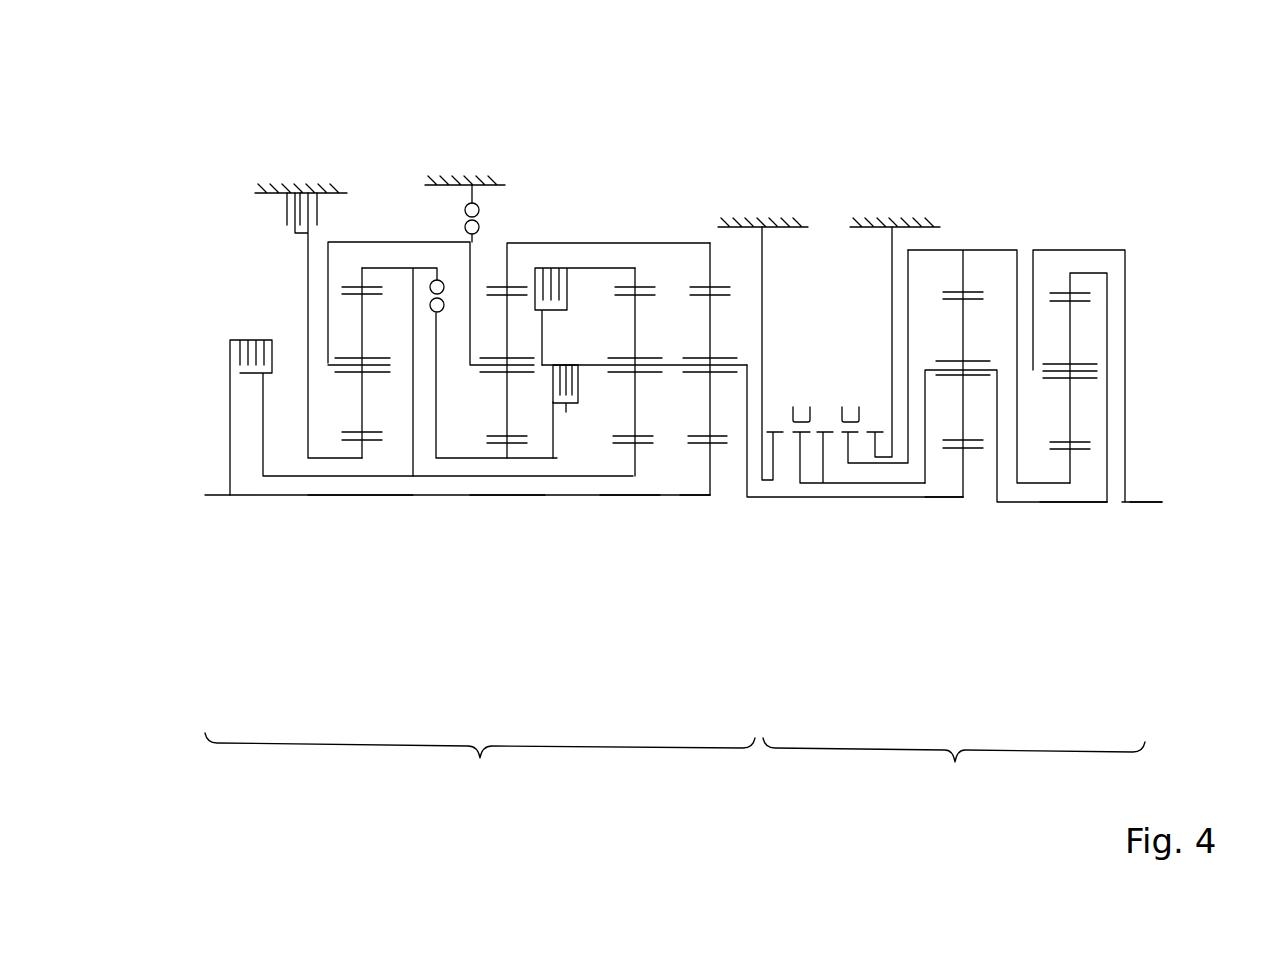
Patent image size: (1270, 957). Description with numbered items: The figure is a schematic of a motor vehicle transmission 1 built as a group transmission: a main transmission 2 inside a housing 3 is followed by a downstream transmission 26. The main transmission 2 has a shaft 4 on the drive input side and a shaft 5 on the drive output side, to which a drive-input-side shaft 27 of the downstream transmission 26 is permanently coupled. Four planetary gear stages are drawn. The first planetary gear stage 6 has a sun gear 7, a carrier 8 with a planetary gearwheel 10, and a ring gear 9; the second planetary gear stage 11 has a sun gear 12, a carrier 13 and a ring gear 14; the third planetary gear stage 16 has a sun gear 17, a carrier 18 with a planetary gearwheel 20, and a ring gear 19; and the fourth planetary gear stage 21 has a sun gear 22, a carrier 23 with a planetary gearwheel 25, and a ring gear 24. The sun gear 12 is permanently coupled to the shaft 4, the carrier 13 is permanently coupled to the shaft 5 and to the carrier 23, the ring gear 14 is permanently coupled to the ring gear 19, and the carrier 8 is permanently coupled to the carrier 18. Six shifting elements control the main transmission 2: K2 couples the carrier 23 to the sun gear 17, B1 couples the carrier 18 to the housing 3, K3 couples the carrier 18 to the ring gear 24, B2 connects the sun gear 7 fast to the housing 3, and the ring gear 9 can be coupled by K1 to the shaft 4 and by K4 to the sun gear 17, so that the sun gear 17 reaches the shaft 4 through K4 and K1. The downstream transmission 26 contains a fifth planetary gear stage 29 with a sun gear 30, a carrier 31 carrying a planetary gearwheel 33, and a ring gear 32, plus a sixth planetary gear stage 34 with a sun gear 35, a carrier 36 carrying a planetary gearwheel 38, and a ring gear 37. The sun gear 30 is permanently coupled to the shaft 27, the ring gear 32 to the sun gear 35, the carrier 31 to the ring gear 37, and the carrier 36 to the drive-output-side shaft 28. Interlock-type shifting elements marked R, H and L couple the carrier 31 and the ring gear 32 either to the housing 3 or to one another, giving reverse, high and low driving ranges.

The motor vehicle transmission 1 is at (203, 163).
The main transmission 2 is at (480, 765).
The housing 3 is at (290, 190).
The shaft on the drive input side 4 is at (205, 492).
The shaft on the drive output side 5 is at (855, 281).
The first planetary gear stage 6 is at (358, 502).
The sun gear 7 is at (345, 435).
The carrier 8 is at (340, 360).
The ring gear 9 is at (380, 268).
The planetary gearwheel 10 is at (363, 313).
The second planetary gear stage 11 is at (707, 502).
The sun gear 12 is at (710, 447).
The carrier 13 is at (678, 378).
The ring gear 14 is at (710, 263).
The third planetary gear stage 16 is at (507, 502).
The sun gear 17 is at (505, 447).
The carrier 18 is at (474, 375).
The ring gear 19 is at (507, 265).
The planetary gearwheel 20 is at (553, 430).
The fourth planetary gear stage 21 is at (632, 502).
The sun gear 22 is at (590, 478).
The carrier 23 is at (665, 364).
The ring gear 24 is at (595, 268).
The planetary gearwheel 25 is at (635, 405).
The downstream transmission 26 is at (954, 768).
The drive-input-side shaft 27 is at (748, 382).
The drive-output-side shaft 28 is at (1142, 498).
The fifth planetary gear stage 29 is at (960, 505).
The sun gear 30 is at (940, 380).
The carrier 31 is at (932, 487).
The ring gear 32 is at (963, 262).
The planetary gearwheel 33 is at (963, 410).
The sixth planetary gear stage 34 is at (1067, 510).
The sun gear 35 is at (1048, 455).
The carrier 36 is at (1035, 282).
The ring gear 37 is at (1090, 273).
The planetary gearwheel 38 is at (1075, 352).
The second shifting element B1 is at (453, 217).
The sixth shifting element B2 is at (283, 217).
The fourth shifting element K1 is at (248, 338).
The first shifting element K2 is at (565, 416).
The fifth shifting element K3 is at (550, 268).
The third shifting element K4 is at (432, 318).